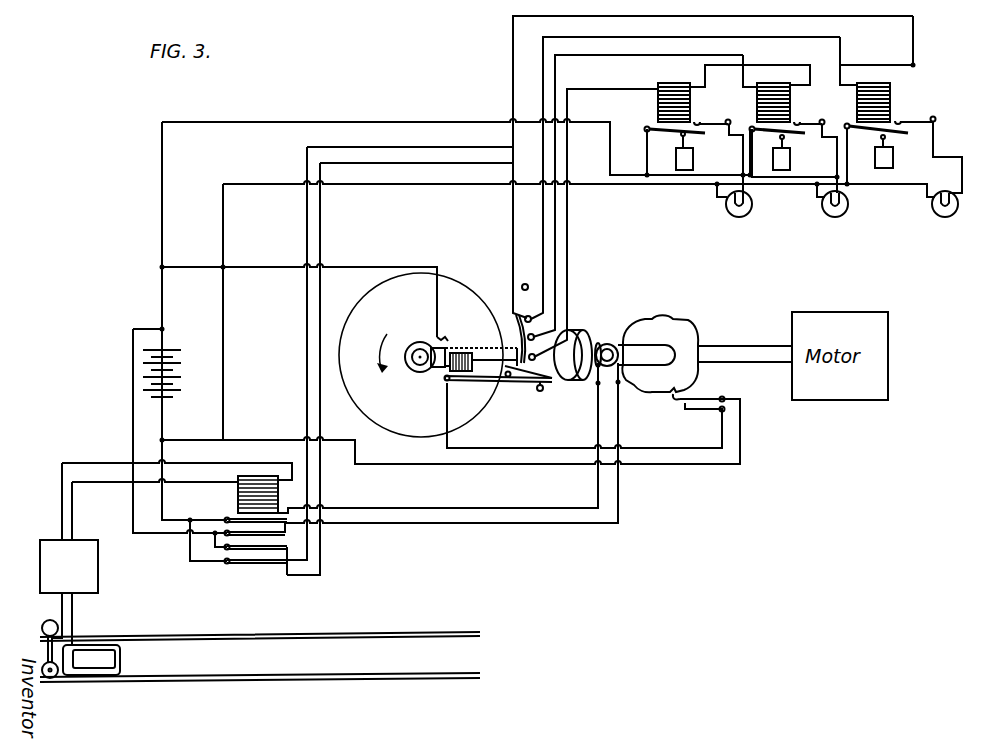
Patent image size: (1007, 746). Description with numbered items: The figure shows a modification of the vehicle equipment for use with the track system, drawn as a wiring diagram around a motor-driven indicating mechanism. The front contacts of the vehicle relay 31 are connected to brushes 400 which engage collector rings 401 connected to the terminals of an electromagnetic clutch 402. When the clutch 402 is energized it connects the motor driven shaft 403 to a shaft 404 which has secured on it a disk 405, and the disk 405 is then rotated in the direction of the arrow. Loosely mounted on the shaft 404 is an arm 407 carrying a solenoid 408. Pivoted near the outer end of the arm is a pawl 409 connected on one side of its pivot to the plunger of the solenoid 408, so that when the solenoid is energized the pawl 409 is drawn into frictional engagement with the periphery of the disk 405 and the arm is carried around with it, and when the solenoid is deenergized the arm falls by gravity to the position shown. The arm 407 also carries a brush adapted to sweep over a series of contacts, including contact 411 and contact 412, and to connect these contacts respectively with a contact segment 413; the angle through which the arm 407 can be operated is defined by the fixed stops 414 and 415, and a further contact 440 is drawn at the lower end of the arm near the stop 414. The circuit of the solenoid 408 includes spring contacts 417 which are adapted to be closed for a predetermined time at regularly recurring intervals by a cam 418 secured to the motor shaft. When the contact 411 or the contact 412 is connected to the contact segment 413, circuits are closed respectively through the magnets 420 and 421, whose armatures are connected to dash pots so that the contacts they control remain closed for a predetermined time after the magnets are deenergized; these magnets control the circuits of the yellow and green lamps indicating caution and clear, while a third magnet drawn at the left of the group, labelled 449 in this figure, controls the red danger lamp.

The relay electromagnet 449 is at (672, 39).
The magnet 420 is at (757, 97).
The magnet 421 is at (892, 98).
The fixed stop 415 is at (522, 284).
The contact segment 413 is at (516, 322).
The contact 412 is at (531, 316).
The disk 405 is at (377, 288).
The shaft 404 is at (406, 346).
The contact 411 is at (490, 322).
The arm 407 is at (482, 350).
The solenoid 408 is at (458, 372).
The pawl 409 is at (507, 386).
The contact 440 is at (543, 389).
The fixed stop 414 is at (540, 392).
The electromagnetic clutch 402 is at (580, 330).
The collector rings 401 is at (609, 343).
The brushes 400 is at (619, 385).
The cam 418 is at (658, 327).
The motor driven shaft 403 is at (741, 345).
The spring contacts 417 is at (695, 405).
The vehicle relay 31 is at (238, 497).